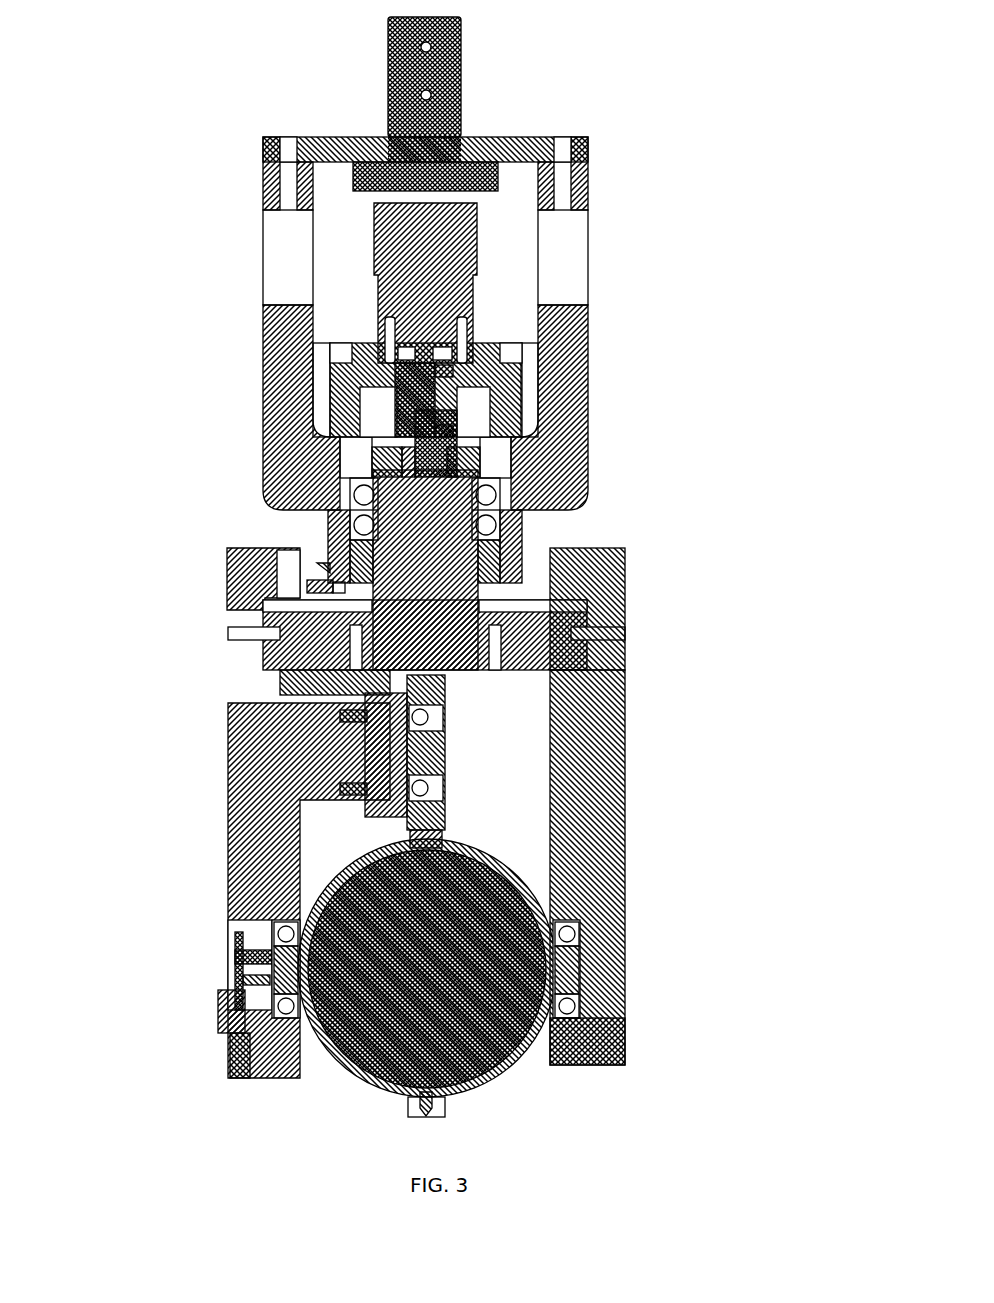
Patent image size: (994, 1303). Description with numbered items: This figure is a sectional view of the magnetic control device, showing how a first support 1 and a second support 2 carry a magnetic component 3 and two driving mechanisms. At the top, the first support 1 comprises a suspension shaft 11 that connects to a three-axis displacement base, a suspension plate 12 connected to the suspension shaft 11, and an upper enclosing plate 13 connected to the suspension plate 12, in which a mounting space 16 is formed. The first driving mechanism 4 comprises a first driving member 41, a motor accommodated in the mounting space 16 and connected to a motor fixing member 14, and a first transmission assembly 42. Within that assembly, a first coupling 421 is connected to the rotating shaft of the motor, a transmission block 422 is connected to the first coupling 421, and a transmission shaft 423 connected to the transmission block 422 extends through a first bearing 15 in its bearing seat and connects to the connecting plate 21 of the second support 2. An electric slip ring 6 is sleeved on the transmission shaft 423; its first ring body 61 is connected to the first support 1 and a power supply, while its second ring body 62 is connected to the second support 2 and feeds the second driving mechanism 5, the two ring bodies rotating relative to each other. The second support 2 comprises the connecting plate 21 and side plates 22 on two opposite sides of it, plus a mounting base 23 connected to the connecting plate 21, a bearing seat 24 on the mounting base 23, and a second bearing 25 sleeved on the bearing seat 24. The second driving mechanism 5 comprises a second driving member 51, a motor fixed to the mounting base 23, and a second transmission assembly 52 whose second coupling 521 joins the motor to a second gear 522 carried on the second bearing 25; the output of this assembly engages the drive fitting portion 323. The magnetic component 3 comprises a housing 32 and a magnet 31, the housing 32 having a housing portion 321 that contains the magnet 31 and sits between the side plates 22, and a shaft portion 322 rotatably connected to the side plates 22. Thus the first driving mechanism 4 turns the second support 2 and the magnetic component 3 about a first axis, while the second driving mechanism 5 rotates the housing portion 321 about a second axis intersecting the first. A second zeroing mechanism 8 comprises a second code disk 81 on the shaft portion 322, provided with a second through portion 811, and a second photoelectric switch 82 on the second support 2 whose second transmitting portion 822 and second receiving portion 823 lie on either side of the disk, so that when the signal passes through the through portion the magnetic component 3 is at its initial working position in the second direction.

The first support 1 is at (352, 260).
The suspension shaft 11 is at (410, 105).
The suspension plate 12 is at (305, 137).
The upper enclosing plate 13 is at (265, 185).
The motor fixing member 14 is at (350, 357).
The first bearing 15 is at (380, 445).
The mounting space 16 is at (320, 373).
The first driving mechanism 4 is at (554, 436).
The first driving member 41 is at (468, 228).
The first transmission assembly 42 is at (521, 397).
The first coupling 421 is at (470, 375).
The transmission block 422 is at (450, 420).
The transmission shaft 423 is at (430, 450).
The electric slip ring 6 is at (244, 541).
The first ring body 61 is at (320, 570).
The second ring body 62 is at (330, 588).
The second support 2 is at (509, 806).
The connecting plate 21 is at (595, 660).
The side plates 22 is at (590, 578).
The mounting base 23 is at (400, 683).
The bearing seat 24 is at (415, 700).
The second bearing 25 is at (440, 795).
The second driving mechanism 5 is at (248, 885).
The second driving member 51 is at (243, 725).
The second transmission assembly 52 is at (272, 763).
The second coupling 521 is at (372, 775).
The second gear 522 is at (387, 815).
The second zeroing mechanism 8 is at (172, 1005).
The second code disk 81 is at (237, 953).
The second through portion 811 is at (235, 997).
The second photoelectric switch 82 is at (184, 1040).
The second transmitting portion 822 is at (220, 1000).
The second receiving portion 823 is at (227, 1038).
The magnetic component 3 is at (548, 973).
The magnet 31 is at (555, 950).
The housing 32 is at (572, 1018).
The housing portion 321 is at (590, 1038).
The shaft portion 322 is at (580, 990).
The drive fitting portion 323 is at (440, 1108).